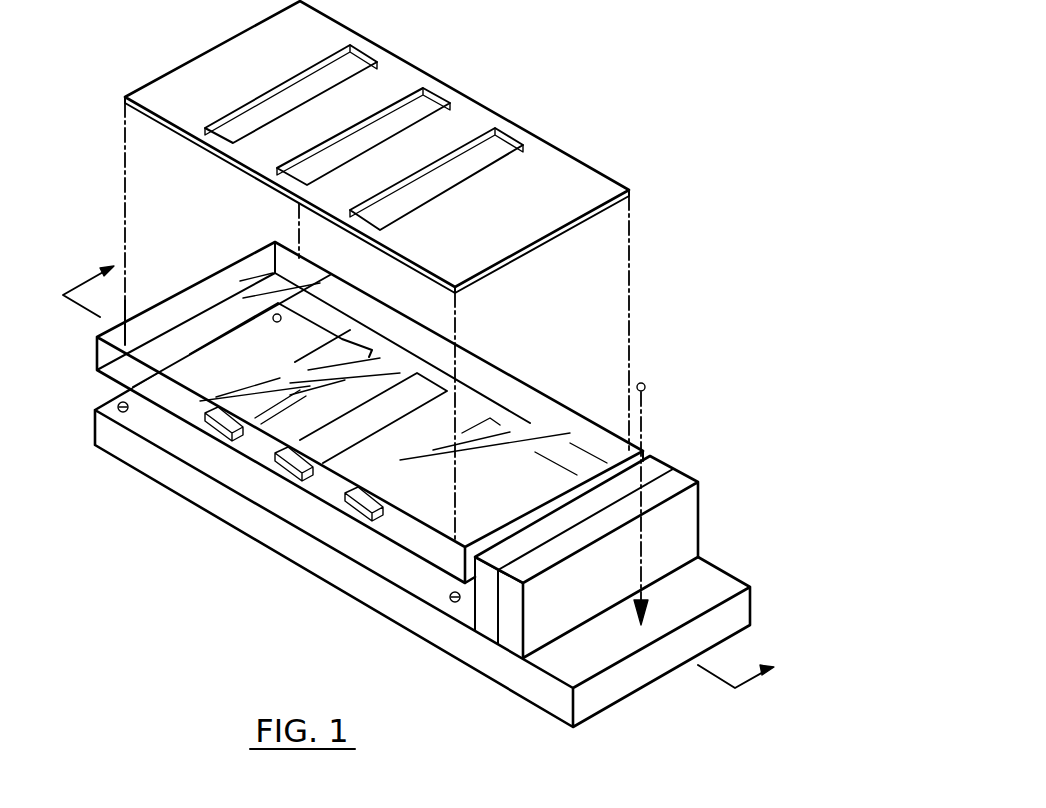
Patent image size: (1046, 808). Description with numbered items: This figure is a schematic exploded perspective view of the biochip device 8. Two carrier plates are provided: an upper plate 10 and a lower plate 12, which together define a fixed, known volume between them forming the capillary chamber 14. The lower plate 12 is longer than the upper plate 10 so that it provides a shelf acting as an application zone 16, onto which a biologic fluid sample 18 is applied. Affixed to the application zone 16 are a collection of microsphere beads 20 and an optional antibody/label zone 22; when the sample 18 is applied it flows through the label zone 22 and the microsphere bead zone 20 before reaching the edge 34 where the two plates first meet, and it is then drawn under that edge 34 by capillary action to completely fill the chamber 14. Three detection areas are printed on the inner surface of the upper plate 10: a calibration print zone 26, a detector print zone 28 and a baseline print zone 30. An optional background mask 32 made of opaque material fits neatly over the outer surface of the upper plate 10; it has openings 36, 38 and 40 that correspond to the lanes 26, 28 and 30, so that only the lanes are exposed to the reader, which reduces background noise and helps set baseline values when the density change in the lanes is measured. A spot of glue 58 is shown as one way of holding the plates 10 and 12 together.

The electronic device assembly 8 is at (718, 88).
The upper carrier plate 10 is at (112, 346).
The lower carrier plate 12 is at (103, 422).
The capillary chamber 14 is at (170, 430).
The application zone 16 is at (612, 644).
The biologic sample 18 is at (648, 387).
The microsphere beads 20 is at (488, 603).
The label zone 22 is at (508, 617).
The calibration print zone 26 is at (356, 342).
The detector print zone 28 is at (430, 390).
The baseline print zone 30 is at (522, 400).
The background mask 32 is at (580, 186).
The edge 34 is at (536, 513).
The first opening 36 is at (353, 62).
The second opening 38 is at (425, 100).
The third opening 40 is at (497, 148).
The spot of glue 58 is at (121, 402).